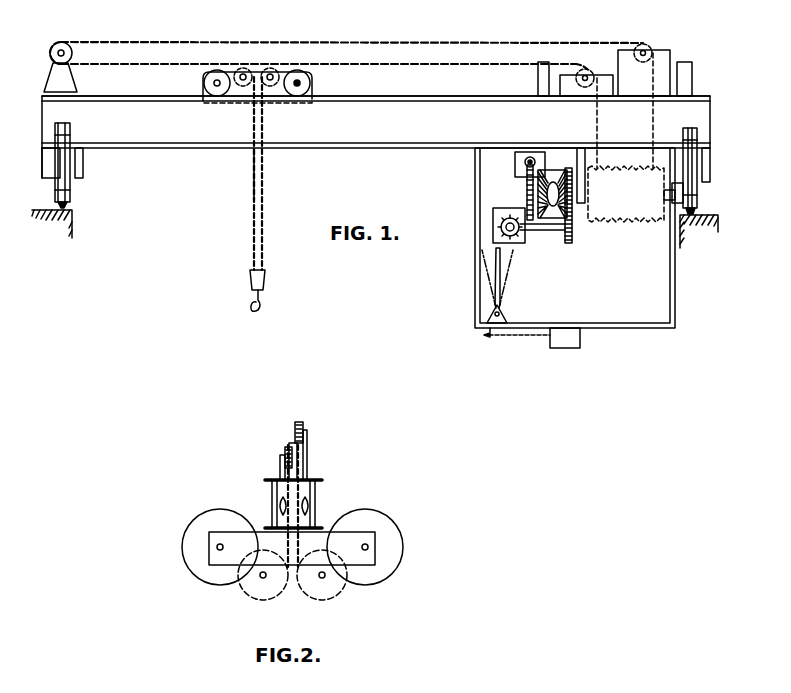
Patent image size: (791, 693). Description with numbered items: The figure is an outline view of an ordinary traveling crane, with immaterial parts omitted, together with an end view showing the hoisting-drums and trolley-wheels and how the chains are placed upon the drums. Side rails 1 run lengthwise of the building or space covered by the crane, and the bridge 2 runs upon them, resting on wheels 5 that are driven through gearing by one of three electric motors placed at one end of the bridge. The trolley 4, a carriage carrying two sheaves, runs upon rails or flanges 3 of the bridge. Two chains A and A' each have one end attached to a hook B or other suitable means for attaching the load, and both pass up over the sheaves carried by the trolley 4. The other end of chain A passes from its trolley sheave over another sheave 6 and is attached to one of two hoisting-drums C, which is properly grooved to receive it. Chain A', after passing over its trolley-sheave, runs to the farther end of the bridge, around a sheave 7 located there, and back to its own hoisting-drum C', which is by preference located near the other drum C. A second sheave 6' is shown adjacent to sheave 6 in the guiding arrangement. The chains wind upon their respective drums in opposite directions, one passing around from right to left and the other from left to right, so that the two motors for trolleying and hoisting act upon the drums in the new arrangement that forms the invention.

In FIG. 1, the side rails 1 is at (67, 205).
In FIG. 1, the bridge 2 is at (376, 122).
In FIG. 1, the rails or flanges 3 is at (125, 94).
In FIG. 1, the trolley 4 is at (298, 83).
In FIG. 1, the wheels 5 is at (53, 188).
In FIG. 2, the wheels 5 is at (292, 547).
In FIG. 1, the sheave 6 is at (586, 76).
In FIG. 2, the sheave 6 is at (271, 449).
In FIG. 1, the guide pulley 6' is at (646, 63).
In FIG. 2, the guide pulley 6' is at (319, 425).
In FIG. 1, the sheave 7 is at (50, 53).
In FIG. 1, the chain A is at (351, 147).
In FIG. 2, the chain A is at (282, 506).
In FIG. 1, the chain A' is at (241, 186).
In FIG. 2, the chain A' is at (303, 506).
In FIG. 1, the hook B is at (265, 292).
In FIG. 1, the hoisting-drum C is at (631, 194).
In FIG. 2, the hoisting-drum C is at (263, 576).
In FIG. 2, the hoisting-drum C' is at (322, 576).